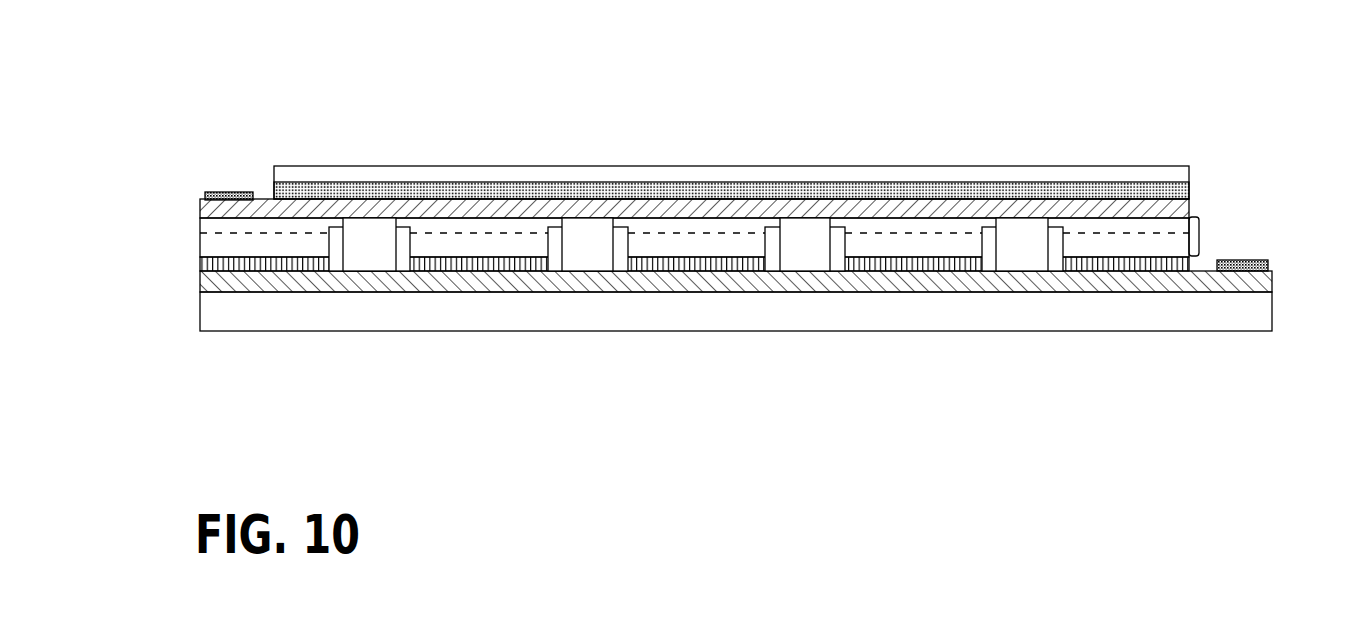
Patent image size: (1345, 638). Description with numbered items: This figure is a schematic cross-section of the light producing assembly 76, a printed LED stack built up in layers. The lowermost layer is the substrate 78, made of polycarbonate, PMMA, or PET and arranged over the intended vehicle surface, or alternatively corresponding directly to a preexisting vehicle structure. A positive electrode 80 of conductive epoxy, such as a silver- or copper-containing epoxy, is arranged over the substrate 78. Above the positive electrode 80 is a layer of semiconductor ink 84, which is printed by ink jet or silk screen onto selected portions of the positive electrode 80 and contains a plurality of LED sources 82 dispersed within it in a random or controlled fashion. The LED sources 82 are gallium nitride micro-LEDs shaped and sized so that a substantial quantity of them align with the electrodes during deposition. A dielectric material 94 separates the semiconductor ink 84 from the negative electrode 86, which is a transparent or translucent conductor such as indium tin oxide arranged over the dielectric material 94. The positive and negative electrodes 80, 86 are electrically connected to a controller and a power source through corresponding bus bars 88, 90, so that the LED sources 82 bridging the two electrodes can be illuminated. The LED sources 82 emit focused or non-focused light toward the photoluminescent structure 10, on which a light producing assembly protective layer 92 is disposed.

The light producing assembly 76 is at (891, 98).
The substrate 78 is at (203, 312).
The positive electrode 80 is at (200, 278).
The LED sources 82 is at (368, 219).
The semiconductor ink 84 is at (200, 262).
The negative electrode 86 is at (200, 207).
The bus bar 88 is at (1248, 262).
The bus bar 90 is at (232, 192).
The light producing assembly protective layer 92 is at (335, 166).
The dielectric material 94 is at (1202, 237).
The photoluminescent structure 10 is at (764, 147).